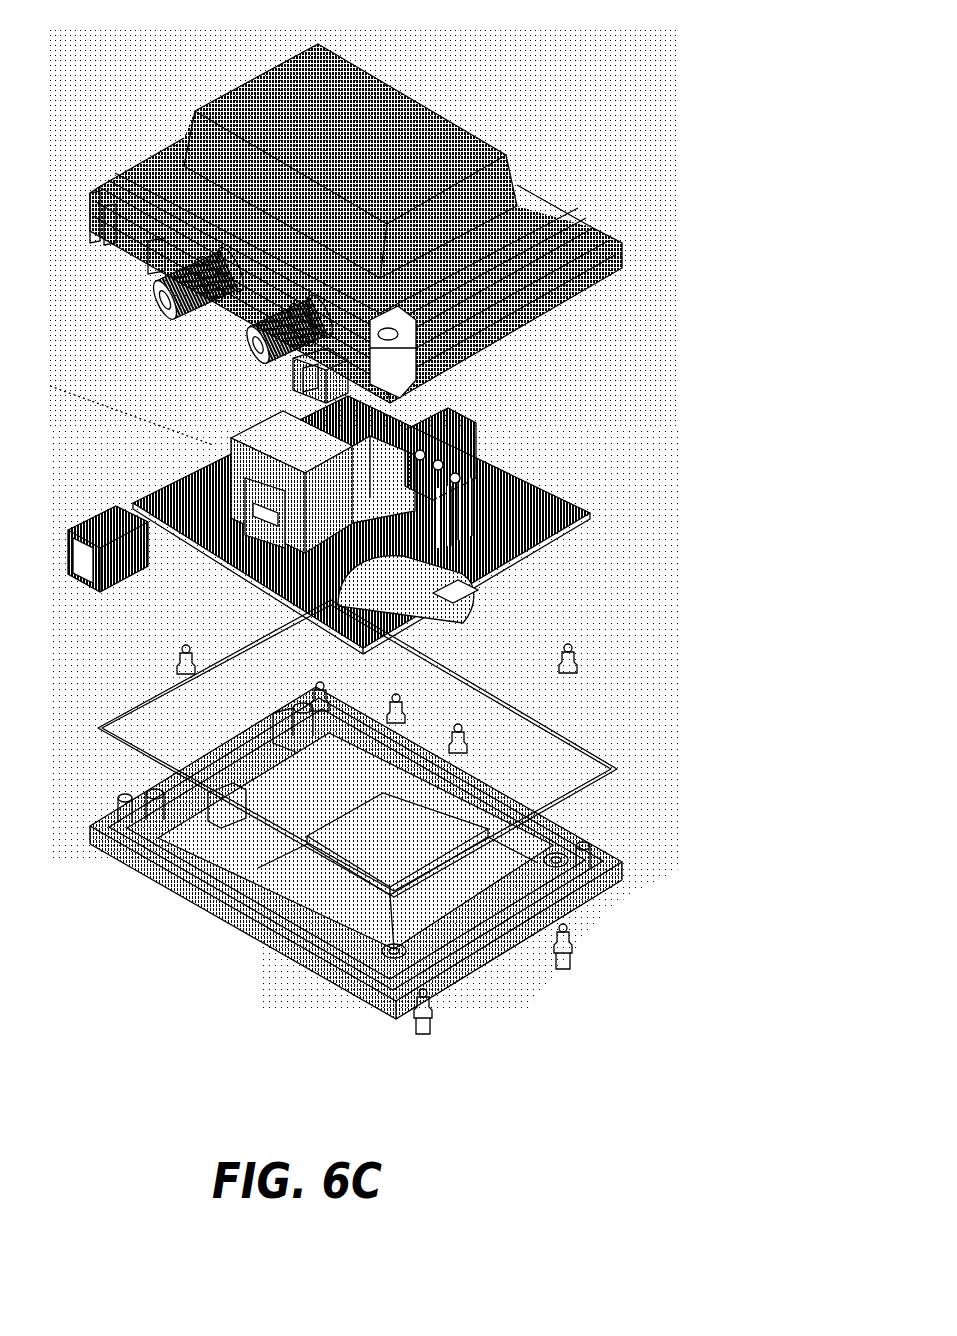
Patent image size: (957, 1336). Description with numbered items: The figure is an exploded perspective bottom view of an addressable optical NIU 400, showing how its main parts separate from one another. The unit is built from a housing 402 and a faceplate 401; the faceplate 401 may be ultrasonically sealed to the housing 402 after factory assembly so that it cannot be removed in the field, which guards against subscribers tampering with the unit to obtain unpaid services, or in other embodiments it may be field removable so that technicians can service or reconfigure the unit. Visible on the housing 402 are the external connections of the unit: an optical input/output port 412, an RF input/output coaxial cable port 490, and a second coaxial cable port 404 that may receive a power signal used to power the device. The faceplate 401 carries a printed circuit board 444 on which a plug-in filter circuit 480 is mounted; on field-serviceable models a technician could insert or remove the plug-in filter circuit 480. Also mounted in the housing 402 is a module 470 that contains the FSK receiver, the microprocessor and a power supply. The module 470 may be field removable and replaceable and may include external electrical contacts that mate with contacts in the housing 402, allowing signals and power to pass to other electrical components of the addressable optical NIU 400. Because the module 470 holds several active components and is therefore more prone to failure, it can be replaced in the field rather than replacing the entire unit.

The addressable optical NIU 400 is at (364, 518).
The housing 402 is at (388, 108).
The RF input/output (coaxial cable) port 490 is at (150, 290).
The second coaxial cable port 404 is at (285, 357).
The module 470 is at (392, 452).
The printed circuit board 444 is at (548, 480).
The optical input/output port 412 is at (95, 578).
The plug-in filter circuit 480 is at (303, 507).
The faceplate 401 is at (252, 914).